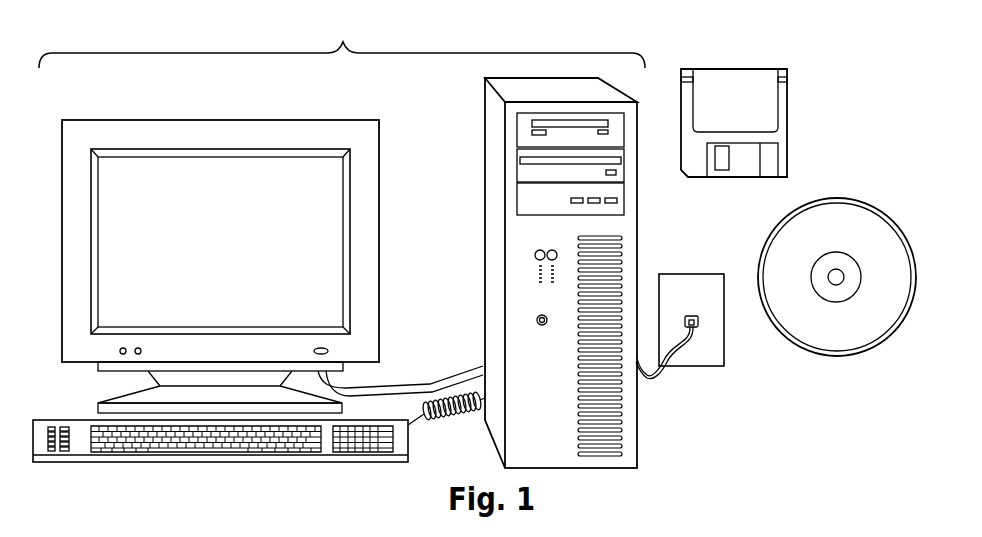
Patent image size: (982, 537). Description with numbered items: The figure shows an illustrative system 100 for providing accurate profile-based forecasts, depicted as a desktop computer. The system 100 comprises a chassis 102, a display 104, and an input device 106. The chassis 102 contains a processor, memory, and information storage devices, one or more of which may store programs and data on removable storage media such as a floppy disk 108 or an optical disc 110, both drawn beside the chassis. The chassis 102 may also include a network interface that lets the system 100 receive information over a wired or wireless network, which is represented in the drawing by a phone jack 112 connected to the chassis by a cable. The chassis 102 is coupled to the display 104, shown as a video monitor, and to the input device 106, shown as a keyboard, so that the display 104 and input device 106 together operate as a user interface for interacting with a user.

The system 100 is at (342, 43).
The chassis 102 is at (484, 315).
The display 104 is at (83, 364).
The input device 106 is at (78, 463).
The floppy disk 108 is at (787, 153).
The optical disc 110 is at (848, 202).
The phone jack 112 is at (683, 274).